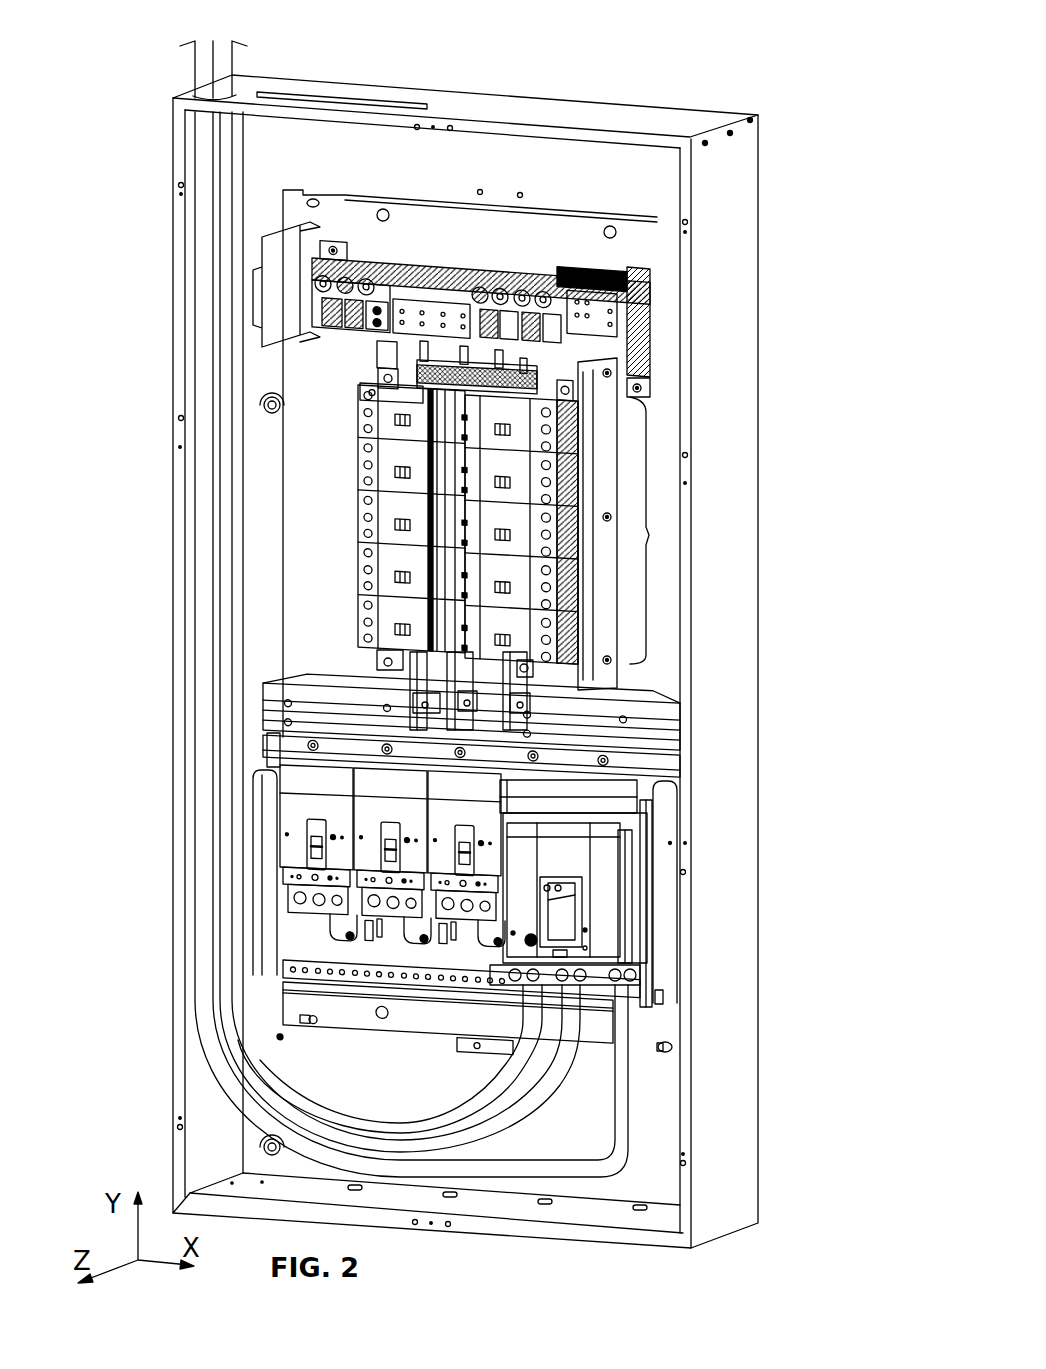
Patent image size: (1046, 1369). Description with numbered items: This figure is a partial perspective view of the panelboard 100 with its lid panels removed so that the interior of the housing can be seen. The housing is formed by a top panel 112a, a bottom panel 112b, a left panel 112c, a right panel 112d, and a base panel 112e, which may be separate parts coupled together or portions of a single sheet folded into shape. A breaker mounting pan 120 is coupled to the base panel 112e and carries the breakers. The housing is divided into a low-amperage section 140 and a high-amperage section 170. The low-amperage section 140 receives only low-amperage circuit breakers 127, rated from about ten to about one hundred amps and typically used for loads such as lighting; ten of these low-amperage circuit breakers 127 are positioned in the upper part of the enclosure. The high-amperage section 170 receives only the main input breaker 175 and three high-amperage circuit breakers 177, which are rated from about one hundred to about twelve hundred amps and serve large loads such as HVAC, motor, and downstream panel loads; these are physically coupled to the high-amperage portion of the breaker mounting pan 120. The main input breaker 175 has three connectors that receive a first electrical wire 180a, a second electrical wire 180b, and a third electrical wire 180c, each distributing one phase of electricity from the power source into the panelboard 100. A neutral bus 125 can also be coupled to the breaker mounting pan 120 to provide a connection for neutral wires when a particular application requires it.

The panelboard 100 is at (603, 82).
The top panel 112a is at (687, 117).
The bottom panel 112b is at (627, 1245).
The left panel 112c is at (172, 603).
The right panel 112d is at (742, 614).
The base panel 112e is at (403, 173).
The breaker mounting pan 120 is at (330, 508).
The neutral bus 125 is at (433, 297).
The low-amperage circuit breakers 127 is at (527, 428).
The low-amperage section 140 is at (648, 535).
The high-amperage section 170 is at (679, 874).
The main input breaker 175 is at (575, 870).
The high-amperage circuit breakers 177 is at (440, 817).
The first electrical wire 180a is at (660, 1050).
The second electrical wire 180b is at (560, 1043).
The third electrical wire 180c is at (513, 1053).